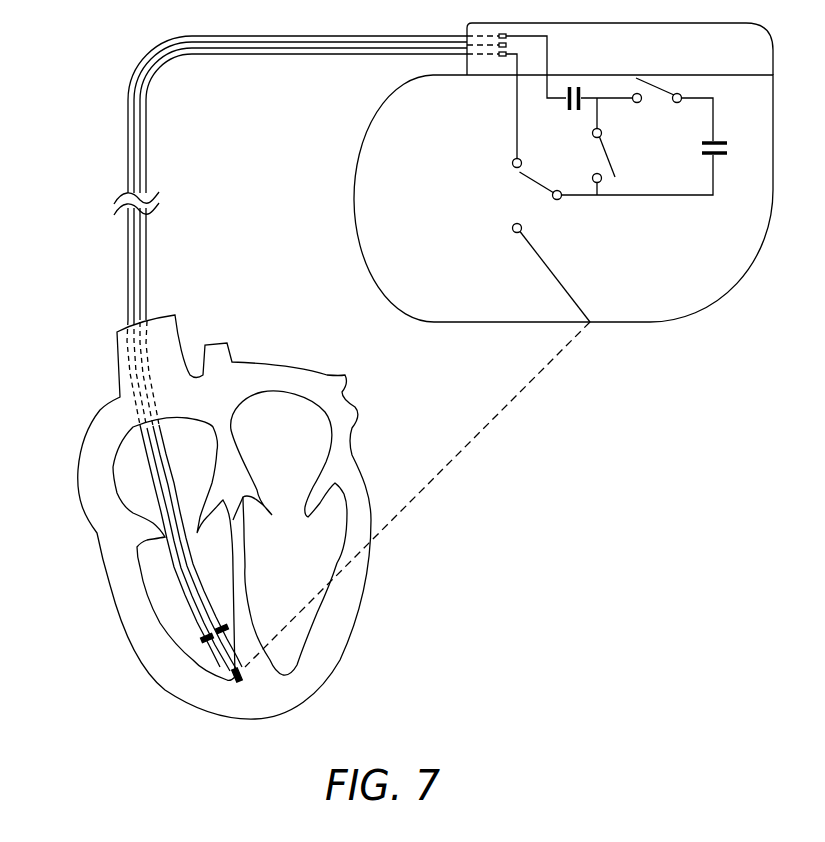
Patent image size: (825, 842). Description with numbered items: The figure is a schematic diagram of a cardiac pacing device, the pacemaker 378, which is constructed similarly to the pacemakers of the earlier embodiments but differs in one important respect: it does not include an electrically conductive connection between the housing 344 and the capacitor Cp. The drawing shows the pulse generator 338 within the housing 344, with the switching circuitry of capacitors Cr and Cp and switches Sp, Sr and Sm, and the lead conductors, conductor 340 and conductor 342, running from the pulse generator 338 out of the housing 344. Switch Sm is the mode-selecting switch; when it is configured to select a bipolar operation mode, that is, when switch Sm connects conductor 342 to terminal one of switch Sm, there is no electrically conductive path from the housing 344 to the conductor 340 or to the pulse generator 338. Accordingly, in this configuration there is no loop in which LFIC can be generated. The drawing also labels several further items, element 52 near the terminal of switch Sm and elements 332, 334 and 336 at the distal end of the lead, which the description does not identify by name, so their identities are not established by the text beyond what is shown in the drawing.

The switch 52 is at (533, 262).
The heart 332 is at (176, 674).
The ring electrode 334 is at (201, 638).
The tip electrode 336 is at (238, 683).
The pulse generator 338 is at (762, 104).
The conductor 340 is at (128, 85).
The conductor 342 is at (161, 73).
The housing 344 is at (682, 313).
The pacemaker 378 is at (748, 368).